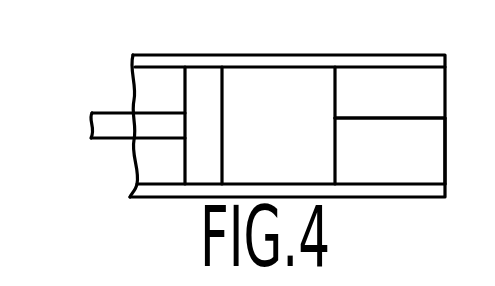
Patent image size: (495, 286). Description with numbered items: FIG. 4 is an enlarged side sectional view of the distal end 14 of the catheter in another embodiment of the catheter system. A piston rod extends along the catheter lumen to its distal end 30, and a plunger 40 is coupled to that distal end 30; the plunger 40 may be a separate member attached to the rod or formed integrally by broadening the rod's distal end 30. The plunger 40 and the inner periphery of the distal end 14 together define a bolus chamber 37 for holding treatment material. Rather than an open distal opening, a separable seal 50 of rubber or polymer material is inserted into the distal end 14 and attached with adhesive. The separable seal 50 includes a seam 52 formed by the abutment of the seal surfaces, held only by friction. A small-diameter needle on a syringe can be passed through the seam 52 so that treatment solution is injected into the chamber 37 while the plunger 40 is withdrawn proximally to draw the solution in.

The distal end 14 is at (427, 198).
The distal end of rod 30 is at (153, 125).
The bolus chamber 37 is at (276, 90).
The plunger 40 is at (198, 83).
The separable seal 50 is at (371, 88).
The seam 52 is at (405, 118).